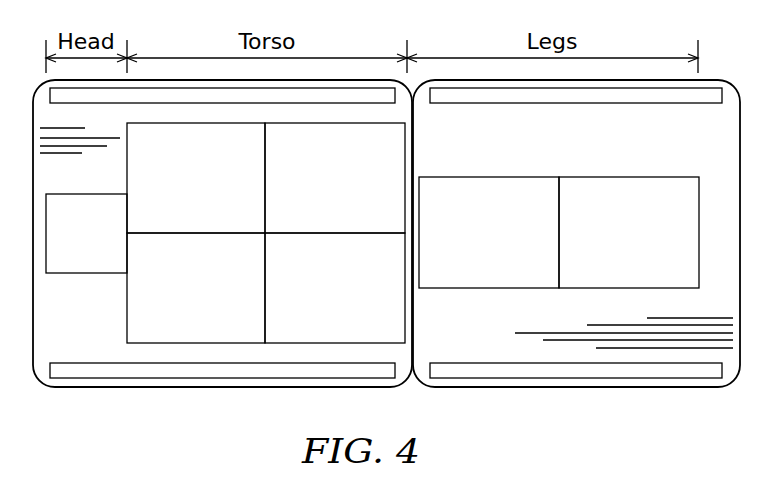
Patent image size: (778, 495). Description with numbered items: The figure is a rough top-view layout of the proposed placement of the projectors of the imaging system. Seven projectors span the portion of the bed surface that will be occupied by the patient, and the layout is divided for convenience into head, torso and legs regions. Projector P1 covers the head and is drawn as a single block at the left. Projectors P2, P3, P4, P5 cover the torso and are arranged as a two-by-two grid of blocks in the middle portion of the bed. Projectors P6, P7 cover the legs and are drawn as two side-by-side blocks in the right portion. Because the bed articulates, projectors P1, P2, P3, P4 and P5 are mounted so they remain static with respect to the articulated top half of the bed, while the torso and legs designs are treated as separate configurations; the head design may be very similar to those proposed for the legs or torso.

The projector P1 is at (86, 233).
The projector P2 is at (196, 178).
The projector P3 is at (335, 178).
The projector P4 is at (196, 288).
The projector P5 is at (335, 288).
The projector P6 is at (489, 232).
The projector P7 is at (629, 232).